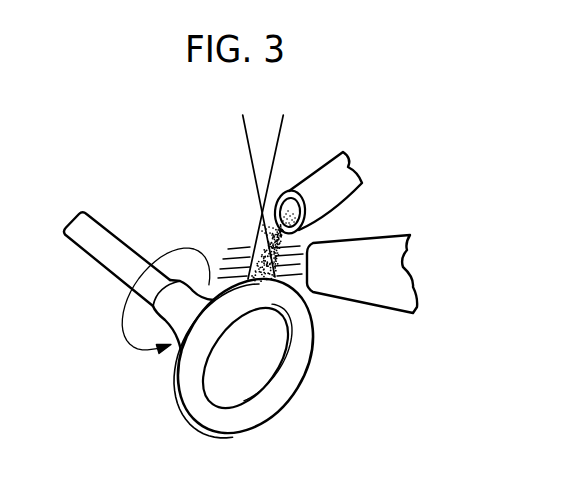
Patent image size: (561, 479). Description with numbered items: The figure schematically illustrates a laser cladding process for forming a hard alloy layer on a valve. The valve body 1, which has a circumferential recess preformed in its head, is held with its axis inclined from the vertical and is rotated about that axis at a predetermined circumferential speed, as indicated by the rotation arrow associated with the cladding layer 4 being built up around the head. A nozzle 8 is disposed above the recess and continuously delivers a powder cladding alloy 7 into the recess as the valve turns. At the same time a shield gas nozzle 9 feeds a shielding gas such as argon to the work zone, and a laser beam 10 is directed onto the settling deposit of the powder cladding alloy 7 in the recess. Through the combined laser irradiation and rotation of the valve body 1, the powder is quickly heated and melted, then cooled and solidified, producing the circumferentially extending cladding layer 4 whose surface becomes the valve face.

The valve body 1 is at (258, 372).
The cladding layer 4 is at (182, 366).
The powder cladding alloy 7 is at (272, 225).
The nozzle 8 is at (340, 190).
The shield gas nozzle 9 is at (357, 290).
The laser beam 10 is at (249, 153).